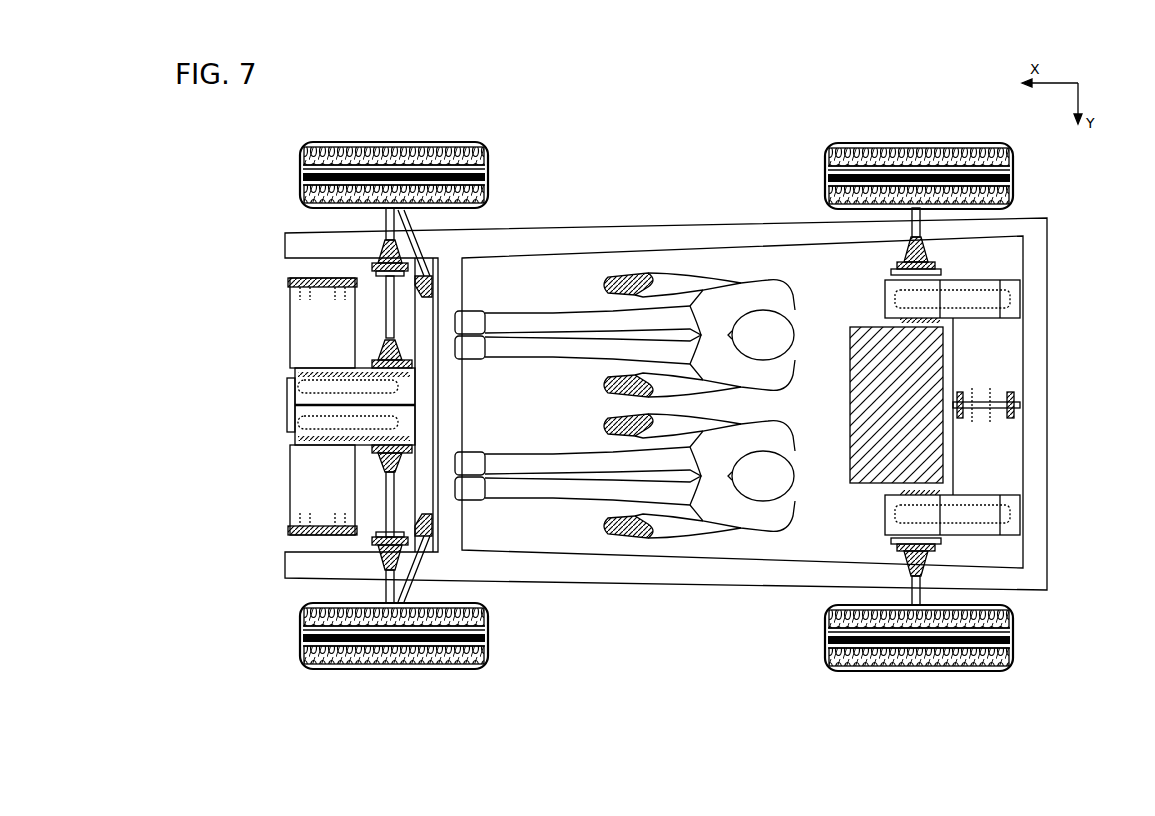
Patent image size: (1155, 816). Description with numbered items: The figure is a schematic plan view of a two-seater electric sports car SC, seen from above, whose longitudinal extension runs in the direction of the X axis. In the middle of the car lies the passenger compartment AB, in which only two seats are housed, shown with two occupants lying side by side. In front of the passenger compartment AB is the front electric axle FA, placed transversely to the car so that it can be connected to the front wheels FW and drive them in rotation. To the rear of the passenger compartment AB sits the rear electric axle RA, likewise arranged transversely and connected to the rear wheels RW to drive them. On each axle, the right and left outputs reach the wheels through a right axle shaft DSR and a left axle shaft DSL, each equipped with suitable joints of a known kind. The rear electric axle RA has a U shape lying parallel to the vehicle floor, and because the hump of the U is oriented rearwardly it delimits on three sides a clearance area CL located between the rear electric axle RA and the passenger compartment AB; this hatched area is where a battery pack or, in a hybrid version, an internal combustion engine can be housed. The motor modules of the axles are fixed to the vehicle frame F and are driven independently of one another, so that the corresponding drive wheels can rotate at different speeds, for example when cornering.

The front wheels FW is at (400, 143).
The rear wheels RW is at (887, 143).
The right axle shaft DSR is at (385, 215).
The left axle shaft DSL is at (385, 582).
The sports car SC is at (645, 202).
The front electric axle FA is at (258, 408).
The rear electric axle RA is at (1034, 458).
The vehicle frame F is at (668, 587).
The passenger compartment AB is at (526, 413).
The clearance area CL is at (892, 411).